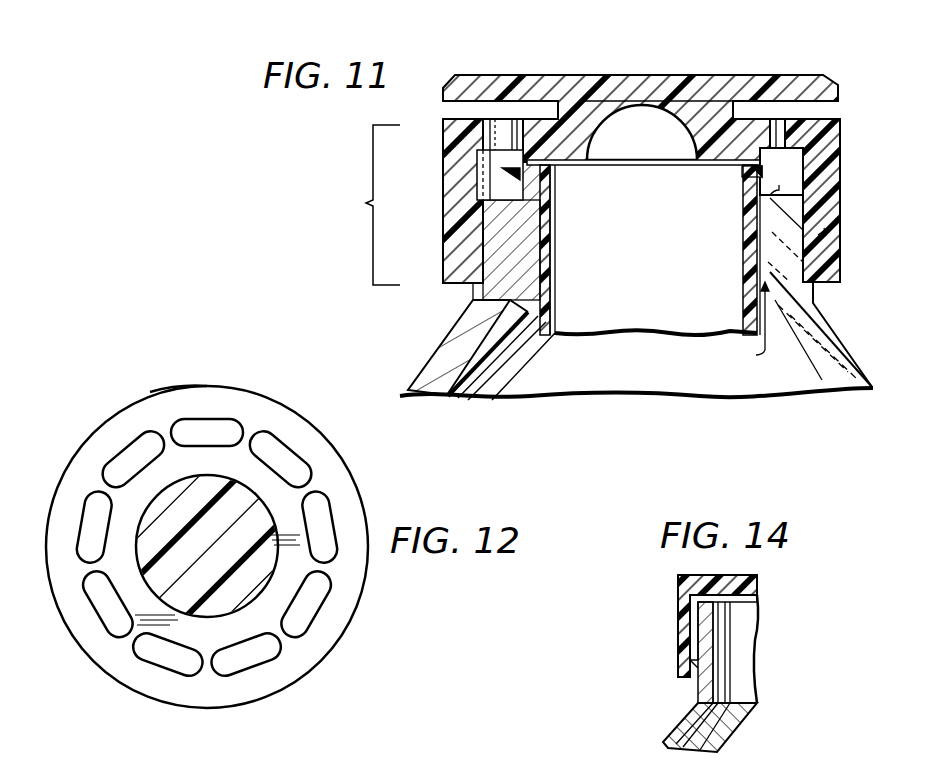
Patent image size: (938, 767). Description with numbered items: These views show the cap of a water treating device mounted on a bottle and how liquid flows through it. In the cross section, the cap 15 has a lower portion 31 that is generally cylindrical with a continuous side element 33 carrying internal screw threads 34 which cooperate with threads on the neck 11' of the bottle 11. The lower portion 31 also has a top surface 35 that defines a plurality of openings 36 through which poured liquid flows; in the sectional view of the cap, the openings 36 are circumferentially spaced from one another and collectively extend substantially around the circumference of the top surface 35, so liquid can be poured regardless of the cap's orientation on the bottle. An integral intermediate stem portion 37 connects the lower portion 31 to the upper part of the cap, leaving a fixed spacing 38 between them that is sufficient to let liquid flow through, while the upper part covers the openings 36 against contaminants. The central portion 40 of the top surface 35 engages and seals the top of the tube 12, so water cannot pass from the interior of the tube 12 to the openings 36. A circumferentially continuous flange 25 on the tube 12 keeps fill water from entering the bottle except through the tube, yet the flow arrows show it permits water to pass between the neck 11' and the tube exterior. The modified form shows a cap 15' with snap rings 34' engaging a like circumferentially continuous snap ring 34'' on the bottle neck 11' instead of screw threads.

In FIG. 11, the bottle 11 is at (821, 329).
In FIG. 11, the tube 12 is at (527, 318).
In FIG. 11, the cap 15 is at (640, 93).
In FIG. 12, the cap 15 is at (199, 547).
In FIG. 11, the flange 25 is at (505, 177).
In FIG. 11, the lower portion 31 is at (361, 205).
In FIG. 11, the side element 33 is at (446, 248).
In FIG. 12, the side element 33 is at (345, 613).
In FIG. 11, the internal screw threads 34 is at (818, 200).
In FIG. 11, the top surface 35 is at (828, 112).
In FIG. 12, the top surface 35 is at (180, 400).
In FIG. 12, the openings 36 is at (322, 498).
In FIG. 11, the intermediate stem portion 37 is at (750, 98).
In FIG. 11, the fixed spacing 38 is at (452, 119).
In FIG. 11, the central portion of the top surface 40 is at (713, 142).
In FIG. 14, the cap 15' is at (692, 626).
In FIG. 14, the snap rings 34' is at (660, 686).
In FIG. 14, the snap ring 34'' is at (743, 630).
In FIG. 14, the neck 11' is at (727, 673).